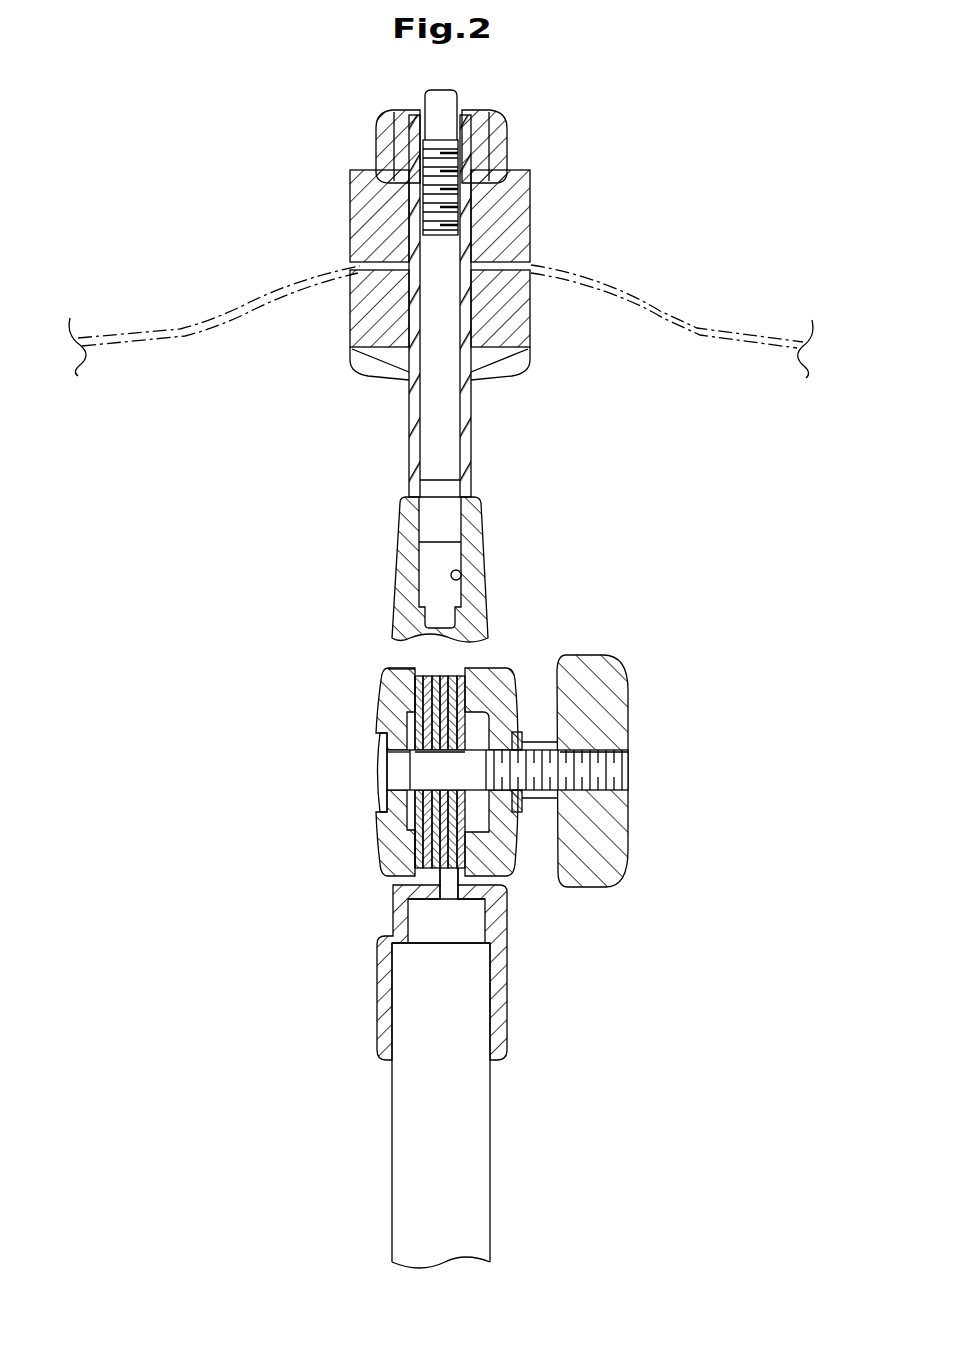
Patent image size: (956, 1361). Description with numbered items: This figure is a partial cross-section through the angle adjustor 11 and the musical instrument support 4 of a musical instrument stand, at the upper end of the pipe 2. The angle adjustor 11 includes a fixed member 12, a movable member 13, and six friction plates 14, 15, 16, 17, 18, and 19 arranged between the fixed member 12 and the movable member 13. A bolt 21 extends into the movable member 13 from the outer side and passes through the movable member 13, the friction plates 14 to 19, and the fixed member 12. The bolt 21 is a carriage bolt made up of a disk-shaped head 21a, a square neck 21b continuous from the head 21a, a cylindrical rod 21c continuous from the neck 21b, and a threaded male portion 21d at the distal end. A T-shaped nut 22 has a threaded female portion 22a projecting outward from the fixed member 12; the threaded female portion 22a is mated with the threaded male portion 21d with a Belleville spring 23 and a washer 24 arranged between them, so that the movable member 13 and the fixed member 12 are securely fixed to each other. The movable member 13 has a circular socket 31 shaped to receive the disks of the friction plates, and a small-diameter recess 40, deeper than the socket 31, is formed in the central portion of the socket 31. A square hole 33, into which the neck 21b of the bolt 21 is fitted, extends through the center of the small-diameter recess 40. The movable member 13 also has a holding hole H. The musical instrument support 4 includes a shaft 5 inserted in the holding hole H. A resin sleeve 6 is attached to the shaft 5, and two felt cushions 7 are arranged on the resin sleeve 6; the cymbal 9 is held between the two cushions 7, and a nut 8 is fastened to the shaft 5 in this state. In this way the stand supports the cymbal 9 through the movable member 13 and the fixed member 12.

The pipe 2 is at (475, 1135).
The musical instrument support 4 is at (571, 399).
The shaft 5 is at (458, 526).
The resin sleeve 6 is at (412, 420).
The felt cushion 7 is at (360, 215).
The nut 8 is at (510, 150).
The cymbal 9 is at (663, 312).
The angle adjustor 11 is at (723, 497).
The fixed member 12 is at (505, 868).
The movable member 13 is at (395, 850).
The friction plate 14 is at (412, 707).
The friction plate 15 is at (415, 676).
The friction plate 16 is at (460, 676).
The friction plate 17 is at (480, 896).
The friction plate 18 is at (446, 918).
The friction plate 19 is at (395, 880).
The bolt 21 is at (380, 780).
The head 21a is at (395, 800).
The neck 21b is at (398, 775).
The rod 21c is at (440, 720).
The threaded male portion 21d is at (560, 862).
The T-shaped nut 22 is at (612, 848).
The threaded female portion 22a is at (624, 778).
The Belleville spring 23 is at (514, 733).
The washer 24 is at (518, 812).
The circular socket 31 is at (425, 862).
The square hole 33 is at (400, 760).
The small-diameter recess 40 is at (430, 825).
The holding hole H is at (462, 577).